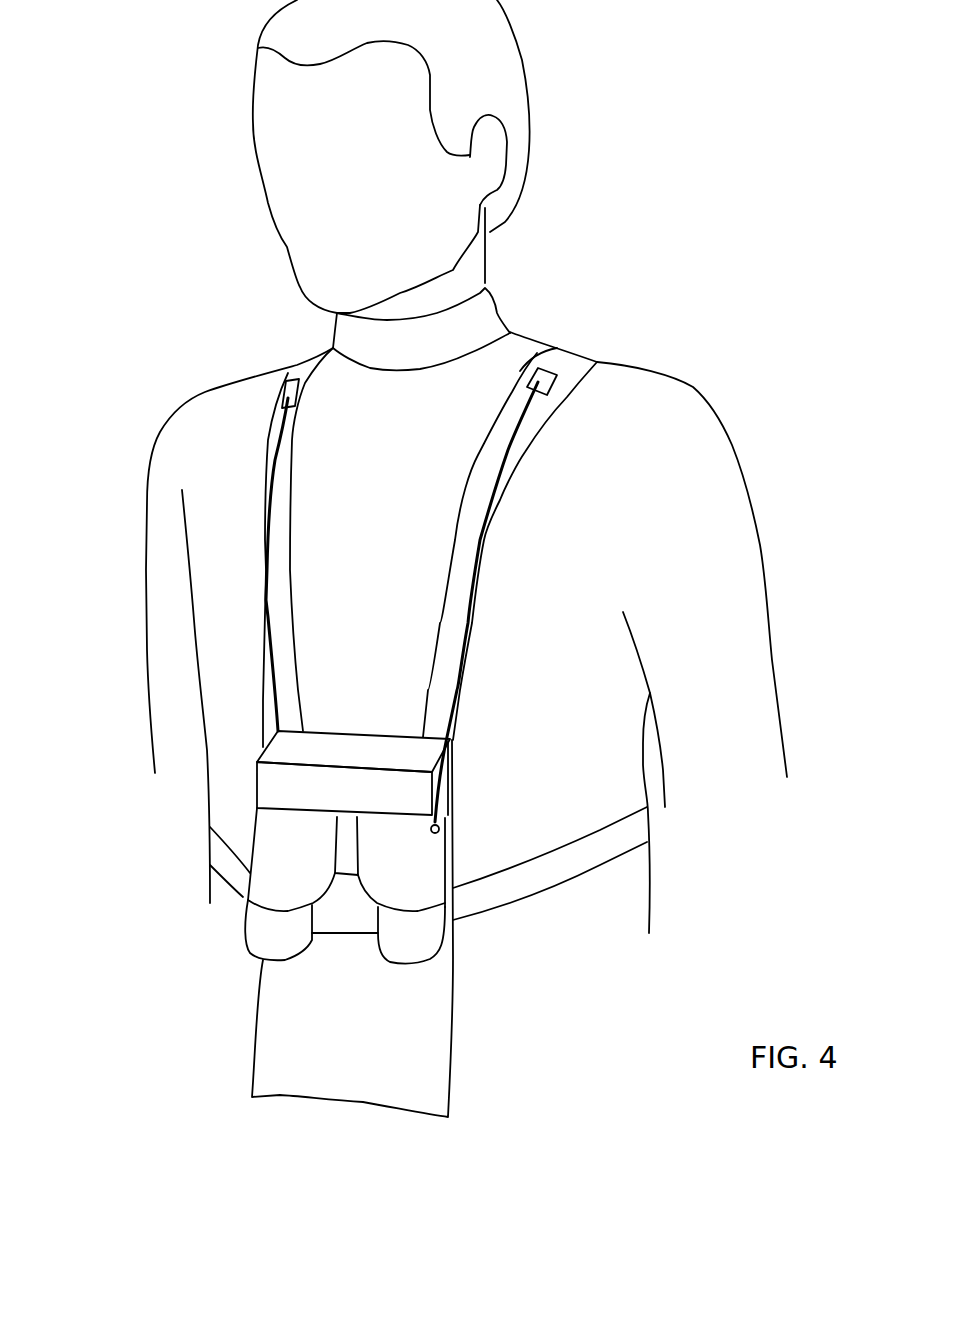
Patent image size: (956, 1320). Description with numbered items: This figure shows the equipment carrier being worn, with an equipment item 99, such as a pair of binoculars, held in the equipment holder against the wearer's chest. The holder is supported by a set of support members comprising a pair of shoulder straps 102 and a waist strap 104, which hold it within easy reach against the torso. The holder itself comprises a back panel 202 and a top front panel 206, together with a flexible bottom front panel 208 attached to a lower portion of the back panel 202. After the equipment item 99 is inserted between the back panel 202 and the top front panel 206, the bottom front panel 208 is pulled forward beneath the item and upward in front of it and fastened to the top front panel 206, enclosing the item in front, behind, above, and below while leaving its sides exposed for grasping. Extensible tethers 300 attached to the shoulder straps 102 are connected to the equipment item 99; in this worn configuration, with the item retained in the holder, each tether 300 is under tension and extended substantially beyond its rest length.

The extensible tether 300 is at (258, 700).
The shoulder straps 102 is at (443, 633).
The top front panel 206 is at (258, 748).
The equipment item 99 is at (417, 933).
The flexible bottom front panel 208 is at (315, 1032).
The back panel 202 is at (453, 857).
The waist strap 104 is at (572, 865).